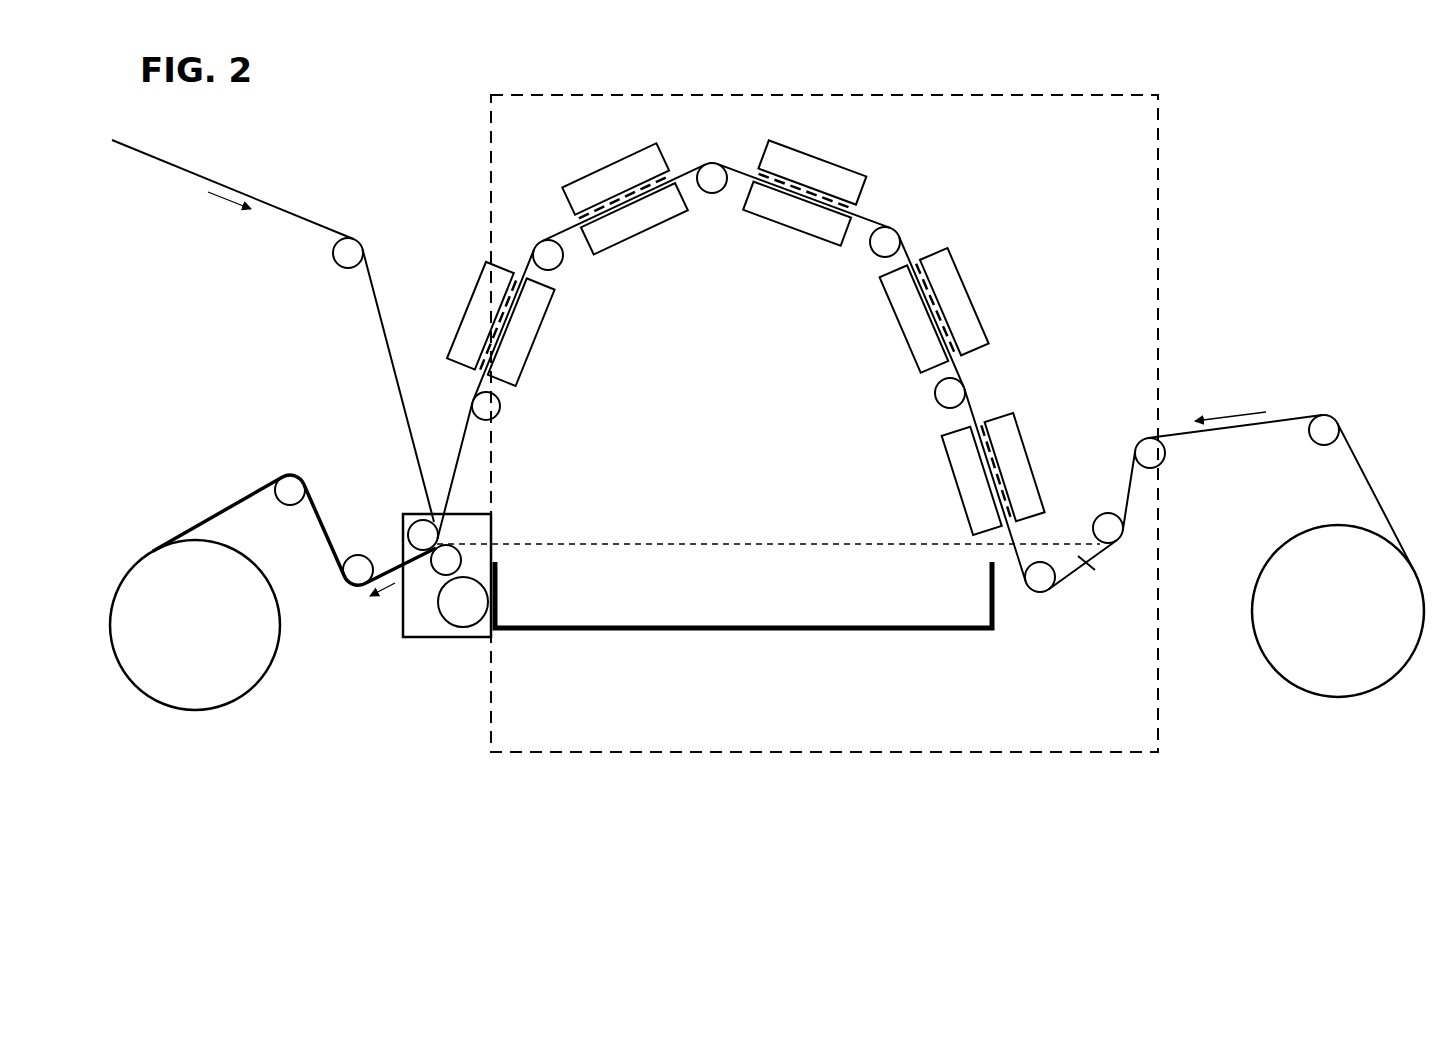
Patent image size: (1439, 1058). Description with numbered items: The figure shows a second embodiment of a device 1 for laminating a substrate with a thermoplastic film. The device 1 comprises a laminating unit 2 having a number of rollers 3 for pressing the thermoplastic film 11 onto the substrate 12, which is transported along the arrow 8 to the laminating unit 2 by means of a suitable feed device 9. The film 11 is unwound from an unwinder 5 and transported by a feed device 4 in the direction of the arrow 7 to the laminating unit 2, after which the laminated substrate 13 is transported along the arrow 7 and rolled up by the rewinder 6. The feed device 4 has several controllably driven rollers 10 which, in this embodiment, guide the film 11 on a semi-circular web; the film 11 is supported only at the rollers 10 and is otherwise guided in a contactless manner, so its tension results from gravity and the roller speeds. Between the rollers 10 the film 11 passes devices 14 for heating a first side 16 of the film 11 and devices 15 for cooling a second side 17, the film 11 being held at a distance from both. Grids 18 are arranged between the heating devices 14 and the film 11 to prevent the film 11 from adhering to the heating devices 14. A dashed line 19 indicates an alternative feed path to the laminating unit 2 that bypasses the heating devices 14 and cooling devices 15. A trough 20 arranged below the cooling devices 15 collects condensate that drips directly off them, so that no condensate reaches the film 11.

The device for laminating a substrate with a thermoplastic film 1 is at (375, 747).
The laminating unit 2 is at (465, 638).
The rollers 3 is at (458, 612).
The feed device 4 is at (1082, 757).
The unwinder 5 is at (1346, 672).
The rewinder 6 is at (203, 690).
The arrow 7 is at (383, 590).
The arrow 8 is at (232, 202).
The feed device 9 is at (318, 212).
The driven rollers 10 is at (552, 260).
The thermoplastic film 11 is at (1207, 436).
The substrate 12 is at (378, 284).
The laminated substrate 13 is at (247, 497).
The heating devices 14 is at (458, 332).
The cooling devices 15 is at (538, 340).
The first side 16 is at (1087, 553).
The second side 17 is at (1095, 568).
The grids 18 is at (512, 268).
The dashed line 19 is at (693, 547).
The trough 20 is at (752, 630).